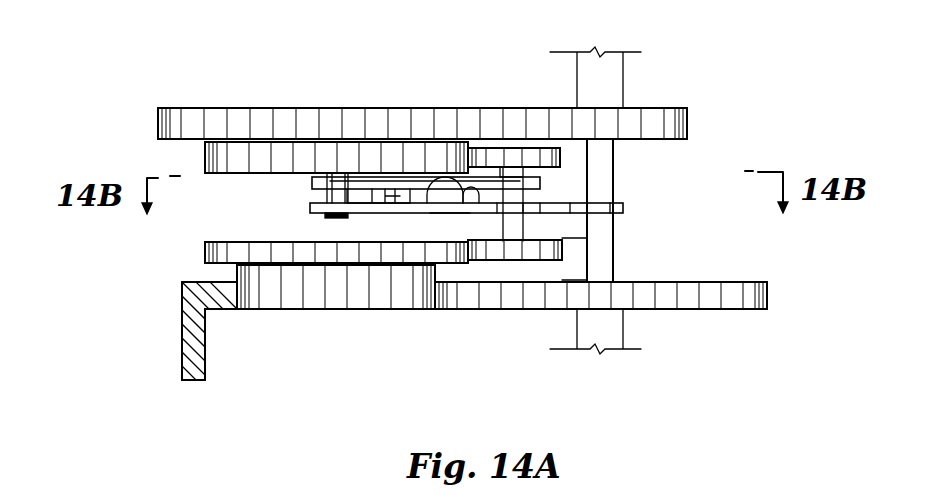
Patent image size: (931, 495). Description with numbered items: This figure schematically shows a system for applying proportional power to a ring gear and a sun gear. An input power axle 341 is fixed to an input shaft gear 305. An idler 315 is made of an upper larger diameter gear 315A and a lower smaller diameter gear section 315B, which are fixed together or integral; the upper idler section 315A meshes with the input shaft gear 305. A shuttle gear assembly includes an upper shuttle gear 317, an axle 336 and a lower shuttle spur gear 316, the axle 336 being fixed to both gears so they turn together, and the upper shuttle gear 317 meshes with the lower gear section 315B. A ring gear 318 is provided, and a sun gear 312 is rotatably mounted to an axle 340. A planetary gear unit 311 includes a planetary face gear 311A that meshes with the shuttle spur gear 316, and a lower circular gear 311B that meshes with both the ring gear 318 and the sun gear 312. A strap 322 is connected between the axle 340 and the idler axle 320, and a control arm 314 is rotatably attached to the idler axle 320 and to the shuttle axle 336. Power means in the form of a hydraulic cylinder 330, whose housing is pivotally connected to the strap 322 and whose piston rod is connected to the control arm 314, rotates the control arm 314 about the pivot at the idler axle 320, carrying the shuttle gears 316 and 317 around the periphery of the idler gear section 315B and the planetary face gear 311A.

The input shaft gear 305 is at (687, 108).
The planetary gear unit 311 is at (203, 268).
The planetary face gear 311A is at (205, 243).
The lower circular gear 311B is at (338, 290).
The sun gear 312 is at (718, 288).
The control arm 314 is at (310, 181).
The idler 315 is at (152, 108).
The upper larger diameter gear 315A is at (233, 115).
The lower smaller diameter gear section 315B is at (205, 160).
The lower shuttle spur gear 316 is at (560, 244).
The upper shuttle gear 317 is at (550, 157).
The ring gear 318 is at (200, 300).
The idler axle 320 is at (310, 207).
The strap 322 is at (448, 207).
The hydraulic cylinder 330 is at (440, 195).
The axle 336 is at (513, 195).
The axle 340 is at (602, 149).
The input power axle 341 is at (605, 80).